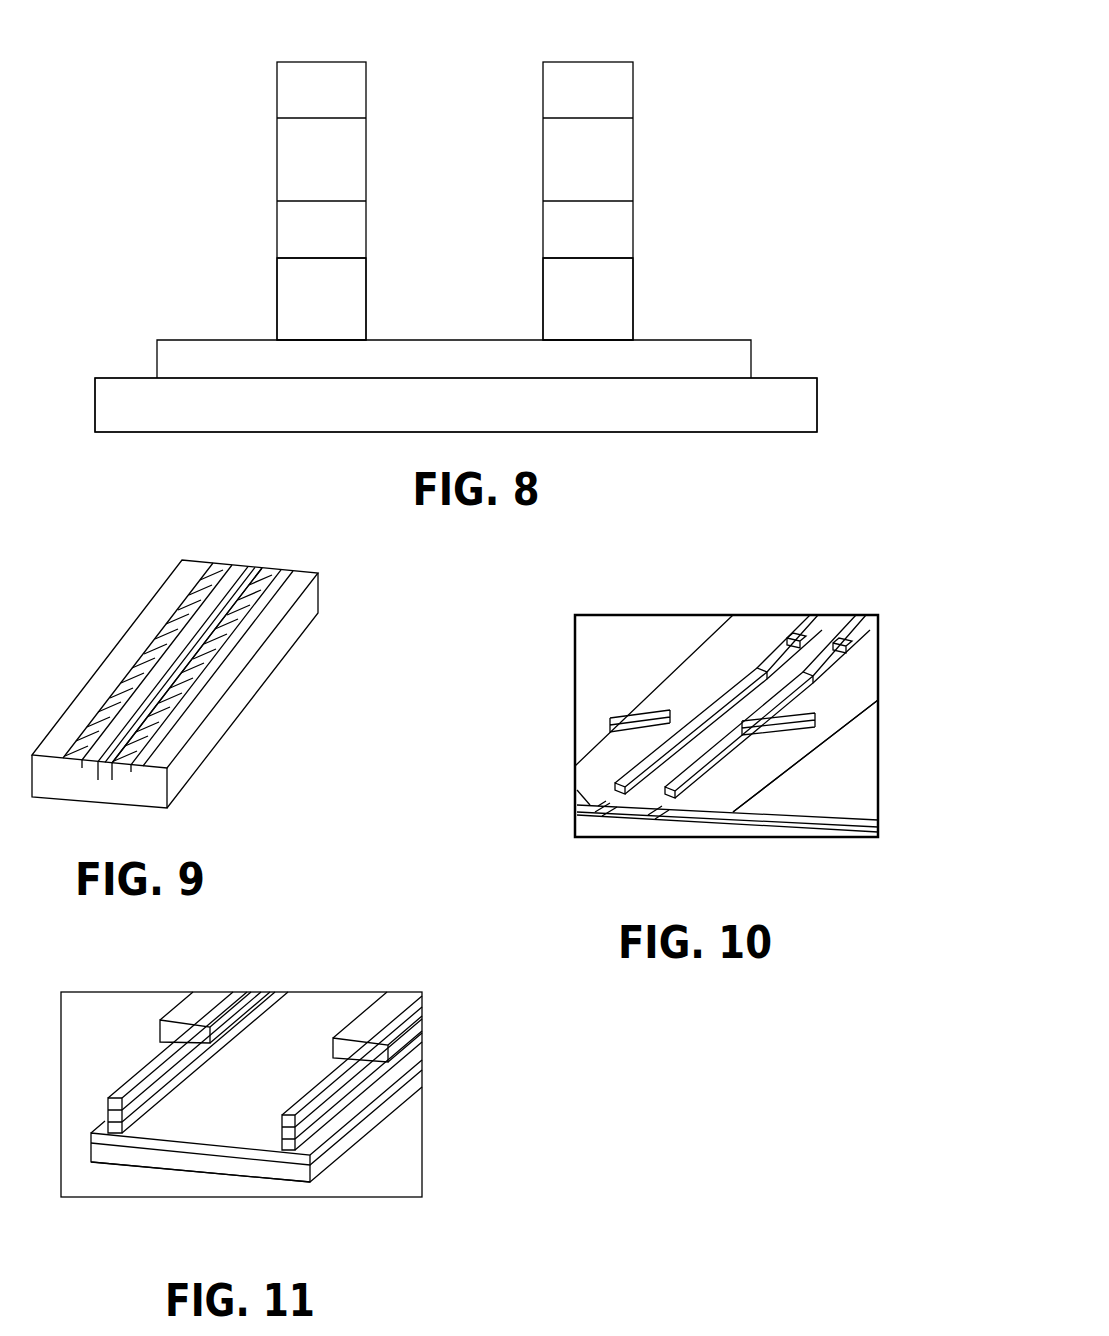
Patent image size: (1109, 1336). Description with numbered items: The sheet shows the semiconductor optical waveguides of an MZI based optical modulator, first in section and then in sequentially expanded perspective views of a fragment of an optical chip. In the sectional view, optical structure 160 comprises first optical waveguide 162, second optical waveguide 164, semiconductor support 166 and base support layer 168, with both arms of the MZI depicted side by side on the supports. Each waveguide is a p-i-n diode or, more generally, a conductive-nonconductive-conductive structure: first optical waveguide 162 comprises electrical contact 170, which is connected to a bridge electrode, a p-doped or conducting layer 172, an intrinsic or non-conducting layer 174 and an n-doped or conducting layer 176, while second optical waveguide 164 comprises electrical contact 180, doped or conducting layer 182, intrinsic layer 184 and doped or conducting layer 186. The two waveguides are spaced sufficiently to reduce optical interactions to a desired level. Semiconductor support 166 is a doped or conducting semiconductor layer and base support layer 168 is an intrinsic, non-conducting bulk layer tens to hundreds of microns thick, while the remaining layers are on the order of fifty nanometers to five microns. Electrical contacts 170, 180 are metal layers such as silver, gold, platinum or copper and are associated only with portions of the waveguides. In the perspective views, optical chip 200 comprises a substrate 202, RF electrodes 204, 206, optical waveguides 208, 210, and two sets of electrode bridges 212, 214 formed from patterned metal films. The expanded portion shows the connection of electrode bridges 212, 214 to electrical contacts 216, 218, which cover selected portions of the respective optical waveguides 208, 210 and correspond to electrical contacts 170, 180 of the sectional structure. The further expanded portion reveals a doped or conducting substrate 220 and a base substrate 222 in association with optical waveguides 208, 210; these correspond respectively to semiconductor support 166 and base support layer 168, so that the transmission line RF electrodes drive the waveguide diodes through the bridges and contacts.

In FIG. 8, the optical structure 160 is at (186, 173).
In FIG. 8, the first optical waveguide 162 is at (259, 84).
In FIG. 8, the second optical waveguide 164 is at (661, 97).
In FIG. 8, the semiconductor support 166 is at (690, 355).
In FIG. 8, the base support layer 168 is at (668, 420).
In FIG. 8, the electrical contact 170 is at (358, 108).
In FIG. 8, the doped or conducting layer 172 is at (358, 168).
In FIG. 8, the intrinsic or non-conducting layer 174 is at (358, 230).
In FIG. 8, the doped or conducting layer 176 is at (358, 310).
In FIG. 8, the electrical contact 180 is at (545, 108).
In FIG. 8, the doped or conducting layer 182 is at (545, 168).
In FIG. 8, the intrinsic layer 184 is at (545, 230).
In FIG. 8, the doped or conducting layer 186 is at (545, 310).
In FIG. 9, the optical chip 200 is at (294, 727).
In FIG. 9, the substrate 202 is at (205, 748).
In FIG. 10, the substrate 202 is at (726, 723).
In FIG. 11, the substrate 202 is at (97, 1180).
In FIG. 9, the RF electrode 204 is at (221, 565).
In FIG. 9, the RF electrode 206 is at (278, 575).
In FIG. 9, the optical waveguide 208 is at (172, 643).
In FIG. 10, the optical waveguide 208 is at (600, 808).
In FIG. 11, the optical waveguide 208 is at (106, 1112).
In FIG. 9, the optical waveguide 210 is at (222, 625).
In FIG. 10, the optical waveguide 210 is at (673, 805).
In FIG. 11, the optical waveguide 210 is at (338, 1100).
In FIG. 9, the electrode bridges 212 is at (100, 755).
In FIG. 10, the electrode bridges 212 is at (578, 790).
In FIG. 9, the electrode bridges 214 is at (115, 757).
In FIG. 10, the electrode bridges 214 is at (812, 735).
In FIG. 10, the electrical contact 216 is at (731, 690).
In FIG. 11, the electrical contact 216 is at (203, 1005).
In FIG. 10, the electrical contact 218 is at (745, 780).
In FIG. 11, the electrical contact 218 is at (403, 1003).
In FIG. 11, the doped or conducting substrate 220 is at (172, 1155).
In FIG. 11, the base substrate 222 is at (258, 1170).